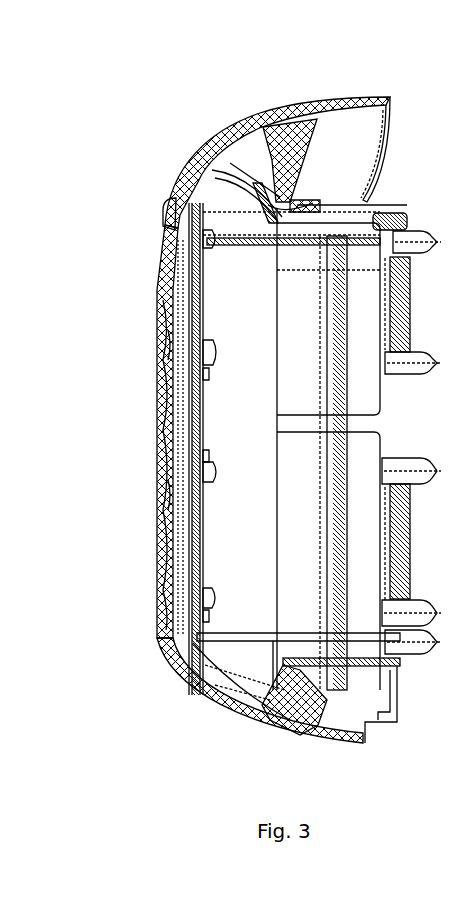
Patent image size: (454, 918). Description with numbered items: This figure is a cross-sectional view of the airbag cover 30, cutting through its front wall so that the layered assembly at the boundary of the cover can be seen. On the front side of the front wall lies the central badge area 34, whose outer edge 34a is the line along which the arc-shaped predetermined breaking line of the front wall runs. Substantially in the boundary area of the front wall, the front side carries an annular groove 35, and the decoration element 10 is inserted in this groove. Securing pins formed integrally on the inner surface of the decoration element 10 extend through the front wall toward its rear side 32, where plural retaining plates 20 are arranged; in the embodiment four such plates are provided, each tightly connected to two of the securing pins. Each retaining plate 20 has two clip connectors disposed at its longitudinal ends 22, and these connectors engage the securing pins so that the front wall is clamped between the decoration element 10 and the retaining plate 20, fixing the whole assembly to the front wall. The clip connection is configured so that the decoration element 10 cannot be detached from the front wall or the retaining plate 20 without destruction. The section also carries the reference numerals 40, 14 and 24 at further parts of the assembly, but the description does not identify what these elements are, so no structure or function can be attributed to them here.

The airbag cover 30 is at (178, 86).
The decoration element 10 is at (173, 200).
The rear side 32 is at (154, 268).
The annular groove 35 is at (163, 220).
The bottom housing wall 40 is at (165, 620).
The badge area 34 is at (160, 405).
The outer edge 34a is at (165, 338).
The longitudinal ends 22 is at (198, 285).
The retaining plate 20 is at (200, 318).
The light emitting diode 14 is at (217, 240).
The lead 24 is at (203, 376).